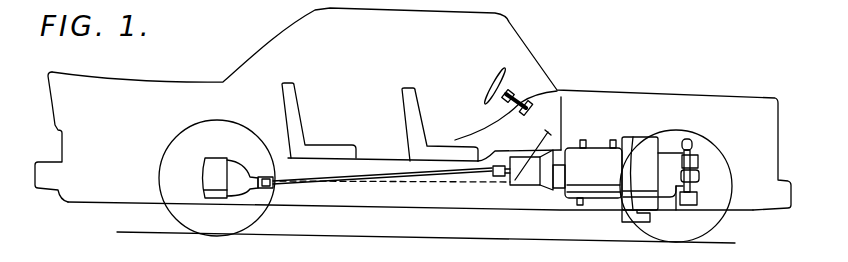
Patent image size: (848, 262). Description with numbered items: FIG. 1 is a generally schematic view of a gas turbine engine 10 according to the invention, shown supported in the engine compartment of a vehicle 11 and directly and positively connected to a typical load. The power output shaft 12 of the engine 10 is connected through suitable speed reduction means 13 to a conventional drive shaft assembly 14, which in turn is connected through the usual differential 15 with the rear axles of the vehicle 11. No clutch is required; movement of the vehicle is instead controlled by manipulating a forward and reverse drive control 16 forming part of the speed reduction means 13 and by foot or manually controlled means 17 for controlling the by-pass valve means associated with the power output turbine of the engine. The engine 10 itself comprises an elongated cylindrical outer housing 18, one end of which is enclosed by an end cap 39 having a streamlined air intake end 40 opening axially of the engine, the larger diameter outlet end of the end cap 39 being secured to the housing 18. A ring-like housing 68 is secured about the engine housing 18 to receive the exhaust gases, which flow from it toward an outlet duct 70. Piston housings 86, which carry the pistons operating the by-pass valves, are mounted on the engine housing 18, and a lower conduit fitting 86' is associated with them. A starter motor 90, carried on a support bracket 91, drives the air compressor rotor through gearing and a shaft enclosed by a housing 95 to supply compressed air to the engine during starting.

The gas turbine engine 10 is at (656, 162).
The vehicle 11 is at (533, 42).
The power output shaft 12 is at (557, 209).
The speed reduction means 13 is at (509, 186).
The drive shaft assembly 14 is at (322, 184).
The differential 15 is at (217, 159).
The forward and reverse drive control 16 is at (487, 106).
The foot or manually controlled means 17 is at (543, 137).
The outer housing 18 is at (602, 201).
The end cap 39 is at (679, 136).
The air intake end 40 is at (695, 160).
The ring-like housing 68 is at (637, 138).
The outlet duct 70 is at (640, 222).
The piston housings 86 is at (579, 130).
The lower conduit fitting 86' is at (566, 230).
The starter motor 90 is at (698, 200).
The support bracket 91 is at (678, 213).
The housing 95 is at (701, 173).